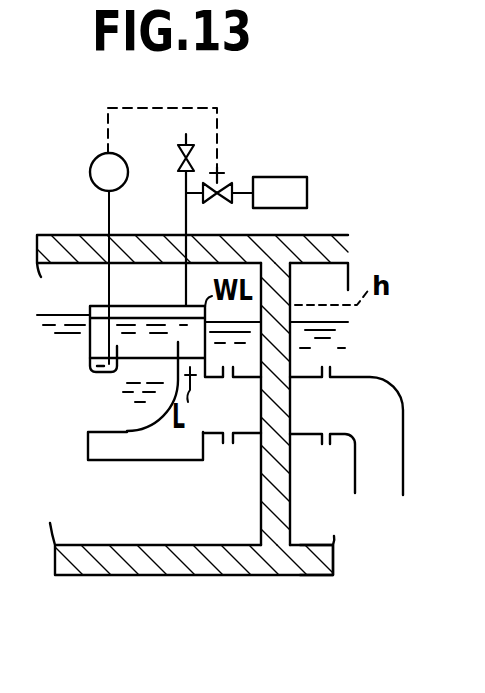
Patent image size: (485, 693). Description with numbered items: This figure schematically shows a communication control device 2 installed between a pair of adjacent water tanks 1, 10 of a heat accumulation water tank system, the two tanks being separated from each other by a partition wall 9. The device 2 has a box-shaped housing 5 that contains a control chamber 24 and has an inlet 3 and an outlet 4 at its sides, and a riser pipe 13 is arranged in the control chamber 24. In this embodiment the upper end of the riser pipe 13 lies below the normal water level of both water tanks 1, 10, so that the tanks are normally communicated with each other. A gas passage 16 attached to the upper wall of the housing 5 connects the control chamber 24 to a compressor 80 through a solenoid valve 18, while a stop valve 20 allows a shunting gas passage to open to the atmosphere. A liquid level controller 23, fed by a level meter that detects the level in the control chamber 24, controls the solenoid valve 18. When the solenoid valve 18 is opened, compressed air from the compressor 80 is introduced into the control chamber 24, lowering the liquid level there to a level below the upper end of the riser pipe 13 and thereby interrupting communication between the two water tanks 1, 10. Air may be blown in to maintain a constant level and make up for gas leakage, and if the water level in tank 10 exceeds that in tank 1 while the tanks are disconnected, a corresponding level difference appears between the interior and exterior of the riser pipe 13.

The water tank 1 is at (168, 537).
The communication control device 2 is at (90, 305).
The inlet 3 is at (203, 413).
The outlet 4 is at (108, 397).
The box-shaped housing 5 is at (130, 460).
The partition wall 9 is at (290, 500).
The water tank 10 is at (317, 538).
The riser pipe 13 is at (90, 363).
The gas passage 16 is at (185, 212).
The solenoid valve 18 is at (222, 203).
The stop valve 20 is at (200, 150).
The liquid level controller 23 is at (90, 170).
The control chamber 24 is at (90, 332).
The compressor 80 is at (308, 186).